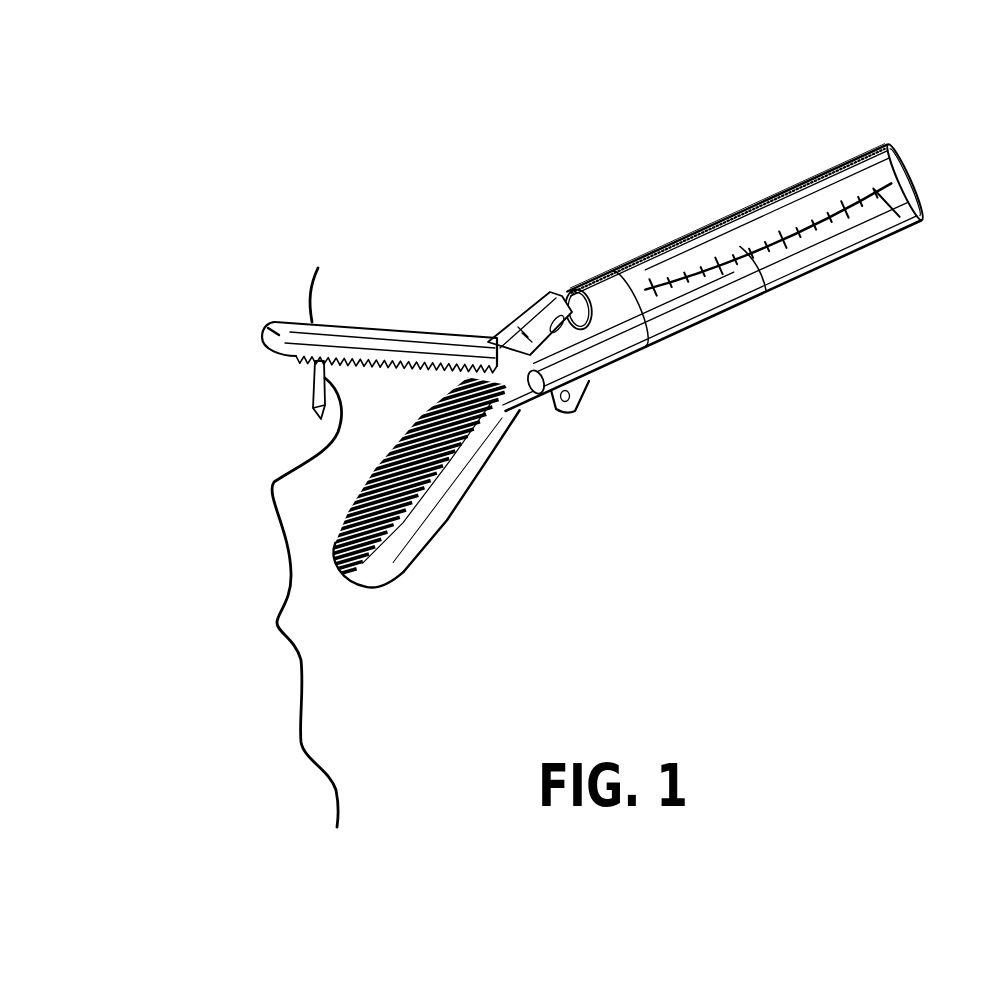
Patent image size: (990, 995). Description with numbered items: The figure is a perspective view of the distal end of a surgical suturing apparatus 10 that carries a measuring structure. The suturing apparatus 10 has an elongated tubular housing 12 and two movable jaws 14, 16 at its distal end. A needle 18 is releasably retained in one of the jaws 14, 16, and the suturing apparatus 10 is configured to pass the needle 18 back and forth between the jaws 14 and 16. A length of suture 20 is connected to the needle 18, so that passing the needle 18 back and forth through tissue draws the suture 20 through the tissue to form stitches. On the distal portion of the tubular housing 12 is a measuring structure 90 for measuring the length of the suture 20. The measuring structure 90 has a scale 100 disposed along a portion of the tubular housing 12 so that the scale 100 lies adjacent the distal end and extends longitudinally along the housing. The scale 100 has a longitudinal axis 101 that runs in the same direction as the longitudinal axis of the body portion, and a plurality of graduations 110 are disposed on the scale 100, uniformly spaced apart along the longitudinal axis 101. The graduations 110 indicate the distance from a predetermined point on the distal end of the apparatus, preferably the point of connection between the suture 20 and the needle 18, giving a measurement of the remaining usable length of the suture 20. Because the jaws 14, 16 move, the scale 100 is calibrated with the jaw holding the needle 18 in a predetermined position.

The suturing apparatus 10 is at (810, 133).
The elongated tubular housing 12 is at (743, 212).
The jaw 14 is at (312, 320).
The jaw 16 is at (427, 547).
The needle 18 is at (312, 382).
The suture 20 is at (272, 483).
The measuring structure 90 is at (658, 234).
The scale 100 is at (699, 303).
The longitudinal axis 101 is at (905, 182).
The graduations 110 is at (748, 262).